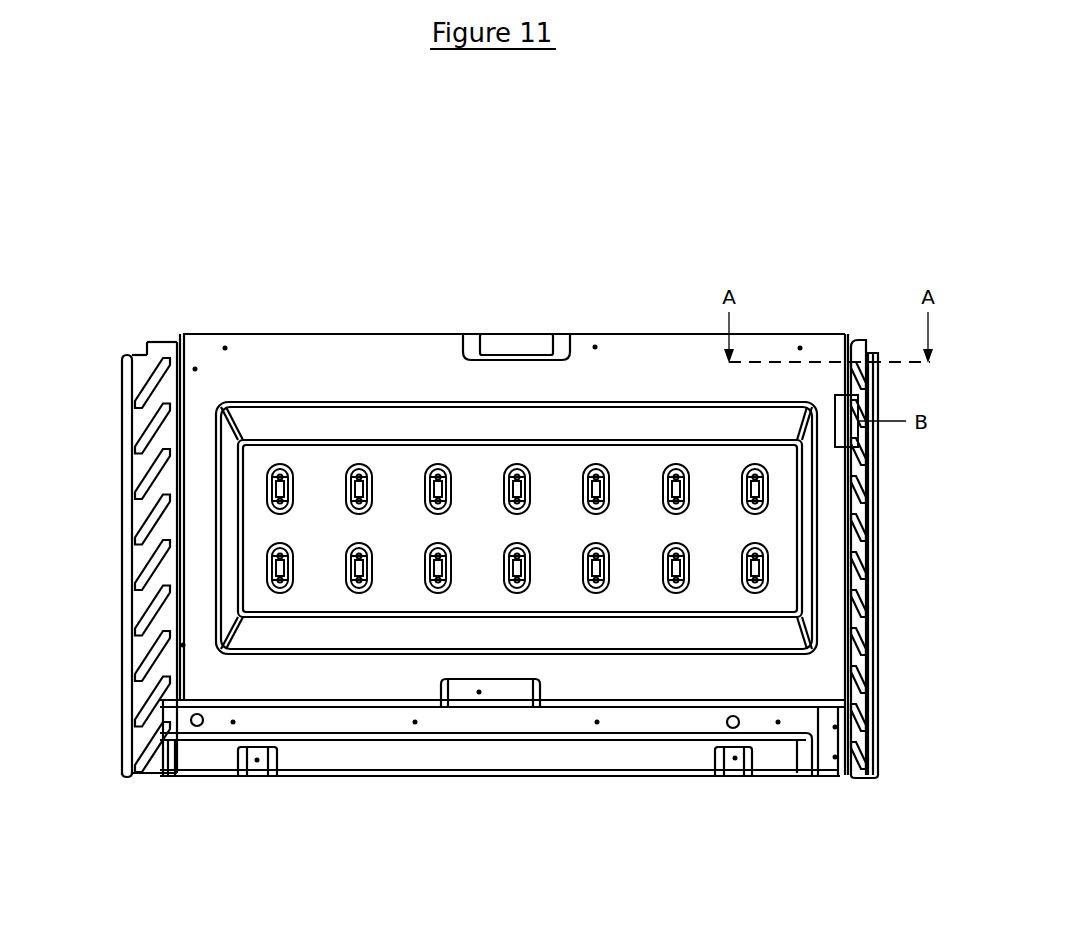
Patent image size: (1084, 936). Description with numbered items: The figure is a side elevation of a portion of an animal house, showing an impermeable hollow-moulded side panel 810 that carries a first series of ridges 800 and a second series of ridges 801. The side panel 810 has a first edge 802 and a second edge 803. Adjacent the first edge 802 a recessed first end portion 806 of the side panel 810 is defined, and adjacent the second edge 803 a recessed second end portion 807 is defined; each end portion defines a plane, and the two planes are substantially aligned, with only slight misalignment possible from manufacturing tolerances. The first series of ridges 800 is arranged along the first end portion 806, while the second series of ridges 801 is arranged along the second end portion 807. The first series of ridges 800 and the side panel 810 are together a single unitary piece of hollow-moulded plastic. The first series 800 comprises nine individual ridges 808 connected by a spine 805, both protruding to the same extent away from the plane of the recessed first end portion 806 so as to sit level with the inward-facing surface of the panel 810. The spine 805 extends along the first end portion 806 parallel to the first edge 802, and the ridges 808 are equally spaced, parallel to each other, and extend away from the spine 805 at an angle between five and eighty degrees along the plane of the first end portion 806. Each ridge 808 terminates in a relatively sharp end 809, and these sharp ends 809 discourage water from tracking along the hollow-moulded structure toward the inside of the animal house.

The first series of ridges 800 is at (862, 462).
The second series of ridges 801 is at (140, 530).
The first edge 802 is at (880, 552).
The second edge 803 is at (130, 472).
The spine 805 is at (858, 318).
The first end portion 806 is at (862, 738).
The second end portion 807 is at (142, 704).
The ridge 808 is at (862, 674).
The sharp end 809 is at (862, 601).
The side panel 810 is at (606, 306).